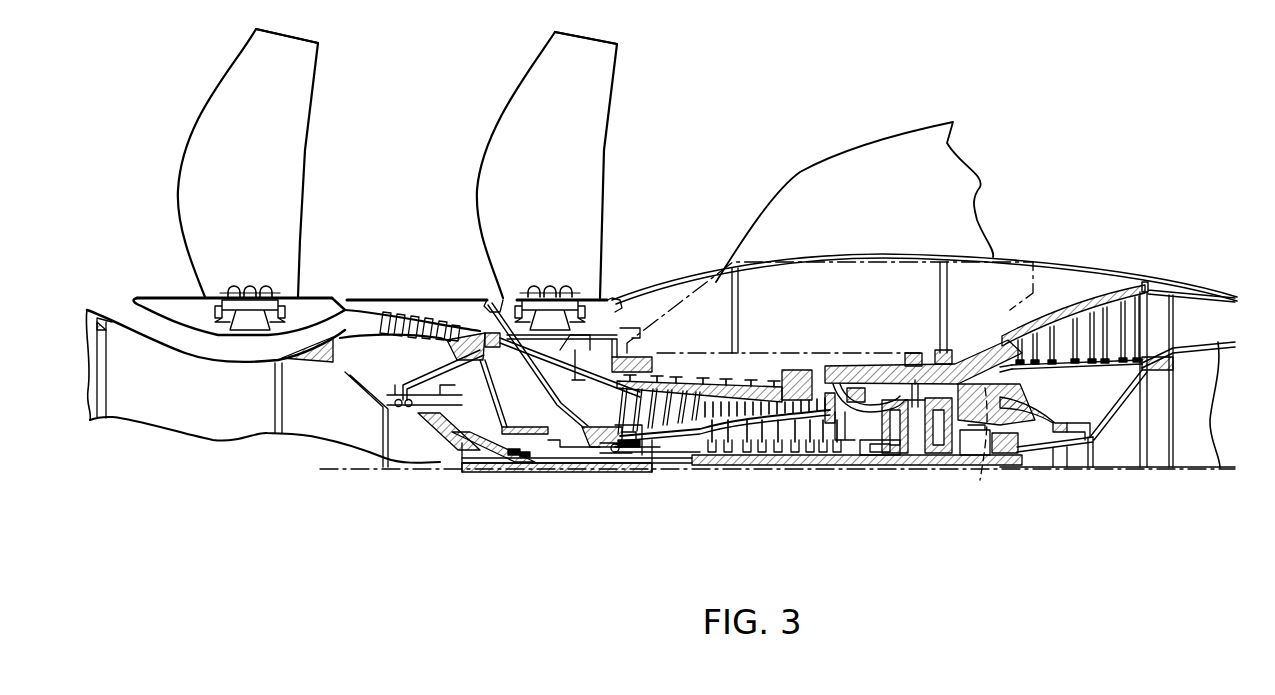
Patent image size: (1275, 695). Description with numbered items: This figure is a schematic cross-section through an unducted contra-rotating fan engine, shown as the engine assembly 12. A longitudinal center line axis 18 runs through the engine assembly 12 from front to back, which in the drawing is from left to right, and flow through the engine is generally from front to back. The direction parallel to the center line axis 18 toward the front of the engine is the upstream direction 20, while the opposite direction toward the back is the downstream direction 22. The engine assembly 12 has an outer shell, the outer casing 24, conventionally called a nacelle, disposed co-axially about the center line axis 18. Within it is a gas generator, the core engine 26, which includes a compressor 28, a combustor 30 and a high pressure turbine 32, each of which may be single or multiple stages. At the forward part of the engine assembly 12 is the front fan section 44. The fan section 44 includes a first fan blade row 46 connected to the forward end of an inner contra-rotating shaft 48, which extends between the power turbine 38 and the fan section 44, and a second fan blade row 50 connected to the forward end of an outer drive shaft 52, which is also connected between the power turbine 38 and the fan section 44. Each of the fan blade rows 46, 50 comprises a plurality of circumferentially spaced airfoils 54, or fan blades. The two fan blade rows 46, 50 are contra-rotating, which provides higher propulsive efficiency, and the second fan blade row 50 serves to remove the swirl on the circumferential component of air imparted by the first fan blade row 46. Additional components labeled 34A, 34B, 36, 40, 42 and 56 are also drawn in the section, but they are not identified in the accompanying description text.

The engine assembly 12 is at (1012, 195).
The longitudinal center line axis 18 is at (338, 461).
The upstream direction 20 is at (50, 397).
The downstream direction 22 is at (1220, 419).
The outer casing 24 is at (880, 253).
The core engine 26 is at (758, 382).
The compressor 28 is at (690, 377).
The combustor 30 is at (887, 390).
The high pressure turbine 32 is at (932, 372).
The forward bearing 34A is at (553, 473).
The aft bearing 34B is at (880, 463).
The turbine disk / bearing support 36 is at (978, 470).
The power turbine 38 is at (1115, 292).
The low pressure turbine blades 40 is at (1067, 326).
The low pressure turbine 42 is at (1045, 322).
The front fan section 44 is at (362, 252).
The first fan blade row 46 is at (293, 135).
The inner contra-rotating shaft 48 is at (697, 470).
The second fan blade row 50 is at (516, 105).
The outer drive shaft 52 is at (720, 456).
The airfoils 54 is at (298, 79).
The outlet guide vane / strut 56 is at (940, 162).